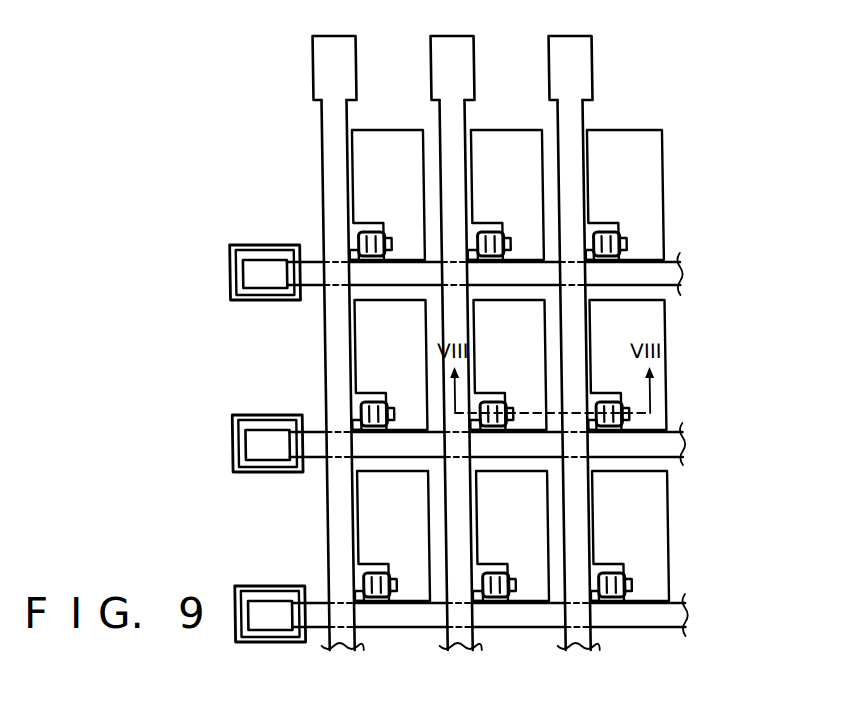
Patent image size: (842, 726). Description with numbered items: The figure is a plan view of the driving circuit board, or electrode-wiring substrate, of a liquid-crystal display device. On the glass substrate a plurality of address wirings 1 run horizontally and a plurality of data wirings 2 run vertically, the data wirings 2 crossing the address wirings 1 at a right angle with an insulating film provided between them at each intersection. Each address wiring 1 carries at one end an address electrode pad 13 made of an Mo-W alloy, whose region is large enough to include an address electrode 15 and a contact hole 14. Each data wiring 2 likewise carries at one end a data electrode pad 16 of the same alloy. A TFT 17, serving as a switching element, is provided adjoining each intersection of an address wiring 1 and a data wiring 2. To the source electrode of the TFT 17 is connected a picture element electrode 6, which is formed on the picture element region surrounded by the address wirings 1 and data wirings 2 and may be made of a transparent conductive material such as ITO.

The address wiring 1 is at (678, 266).
The data wiring 2 is at (333, 653).
The picture element electrode 6 is at (360, 340).
The address electrode pad 13 is at (226, 262).
The contact hole 14 is at (268, 280).
The address electrode 15 is at (264, 245).
The data electrode pad 16 is at (356, 66).
The TFT 17 is at (375, 232).